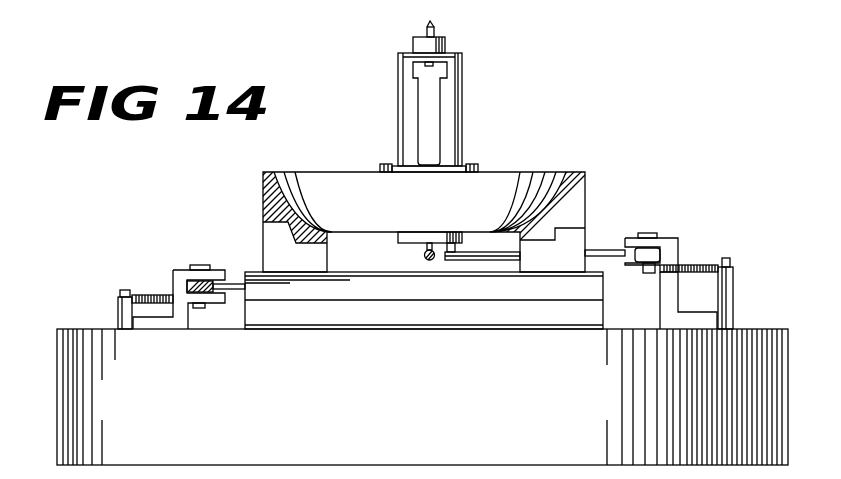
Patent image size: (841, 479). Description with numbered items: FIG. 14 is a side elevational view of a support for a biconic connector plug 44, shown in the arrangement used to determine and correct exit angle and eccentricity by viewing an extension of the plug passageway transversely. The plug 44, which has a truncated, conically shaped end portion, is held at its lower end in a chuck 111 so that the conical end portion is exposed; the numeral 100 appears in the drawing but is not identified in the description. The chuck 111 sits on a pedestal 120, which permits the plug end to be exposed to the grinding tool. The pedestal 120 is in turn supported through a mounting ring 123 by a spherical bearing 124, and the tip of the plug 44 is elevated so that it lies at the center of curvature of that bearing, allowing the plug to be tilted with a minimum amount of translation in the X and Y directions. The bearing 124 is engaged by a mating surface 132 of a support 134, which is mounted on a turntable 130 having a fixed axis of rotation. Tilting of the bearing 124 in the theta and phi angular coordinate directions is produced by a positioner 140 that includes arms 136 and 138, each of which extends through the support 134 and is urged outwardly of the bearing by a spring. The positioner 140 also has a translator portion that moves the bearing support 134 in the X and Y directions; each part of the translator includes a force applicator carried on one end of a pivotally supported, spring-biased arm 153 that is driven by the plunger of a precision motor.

The probe tip 100 is at (428, 22).
The plug 44 is at (414, 37).
The chuck 111 is at (447, 47).
The pedestal 120 is at (466, 124).
The mounting ring 123 is at (483, 163).
The spherical bearing 124 is at (385, 202).
The mating surface 132 is at (560, 172).
The support 134 is at (578, 216).
The arm 136 is at (433, 262).
The arm 138 is at (465, 262).
The positioner 140 is at (698, 236).
The arm 153 is at (212, 282).
The turntable 130 is at (772, 326).